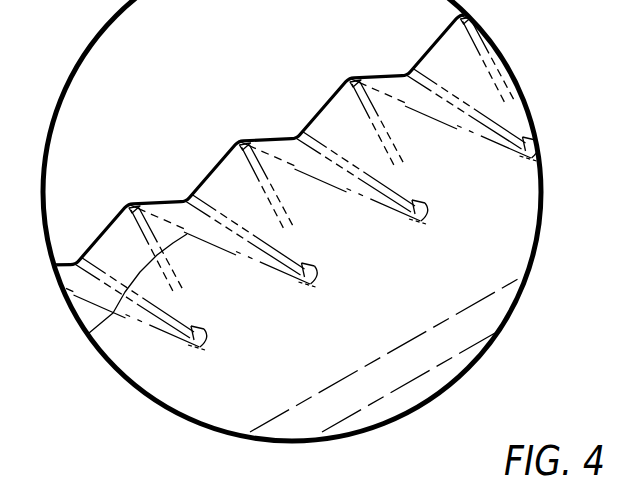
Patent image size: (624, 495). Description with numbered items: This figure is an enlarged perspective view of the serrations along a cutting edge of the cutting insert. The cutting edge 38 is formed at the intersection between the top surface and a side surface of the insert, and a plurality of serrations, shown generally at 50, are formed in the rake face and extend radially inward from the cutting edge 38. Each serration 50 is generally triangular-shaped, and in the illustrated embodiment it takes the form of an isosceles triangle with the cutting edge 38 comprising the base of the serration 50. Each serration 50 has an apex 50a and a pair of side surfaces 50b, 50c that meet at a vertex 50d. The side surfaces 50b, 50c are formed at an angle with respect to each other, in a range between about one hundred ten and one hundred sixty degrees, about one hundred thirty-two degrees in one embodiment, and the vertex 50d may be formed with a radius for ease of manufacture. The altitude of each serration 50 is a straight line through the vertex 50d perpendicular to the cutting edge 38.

The cutting edge 38 is at (265, 139).
The serration 50 is at (257, 184).
The apex 50a is at (313, 284).
The side surface 50b is at (83, 338).
The side surface 50c is at (242, 202).
The vertex 50d is at (215, 220).